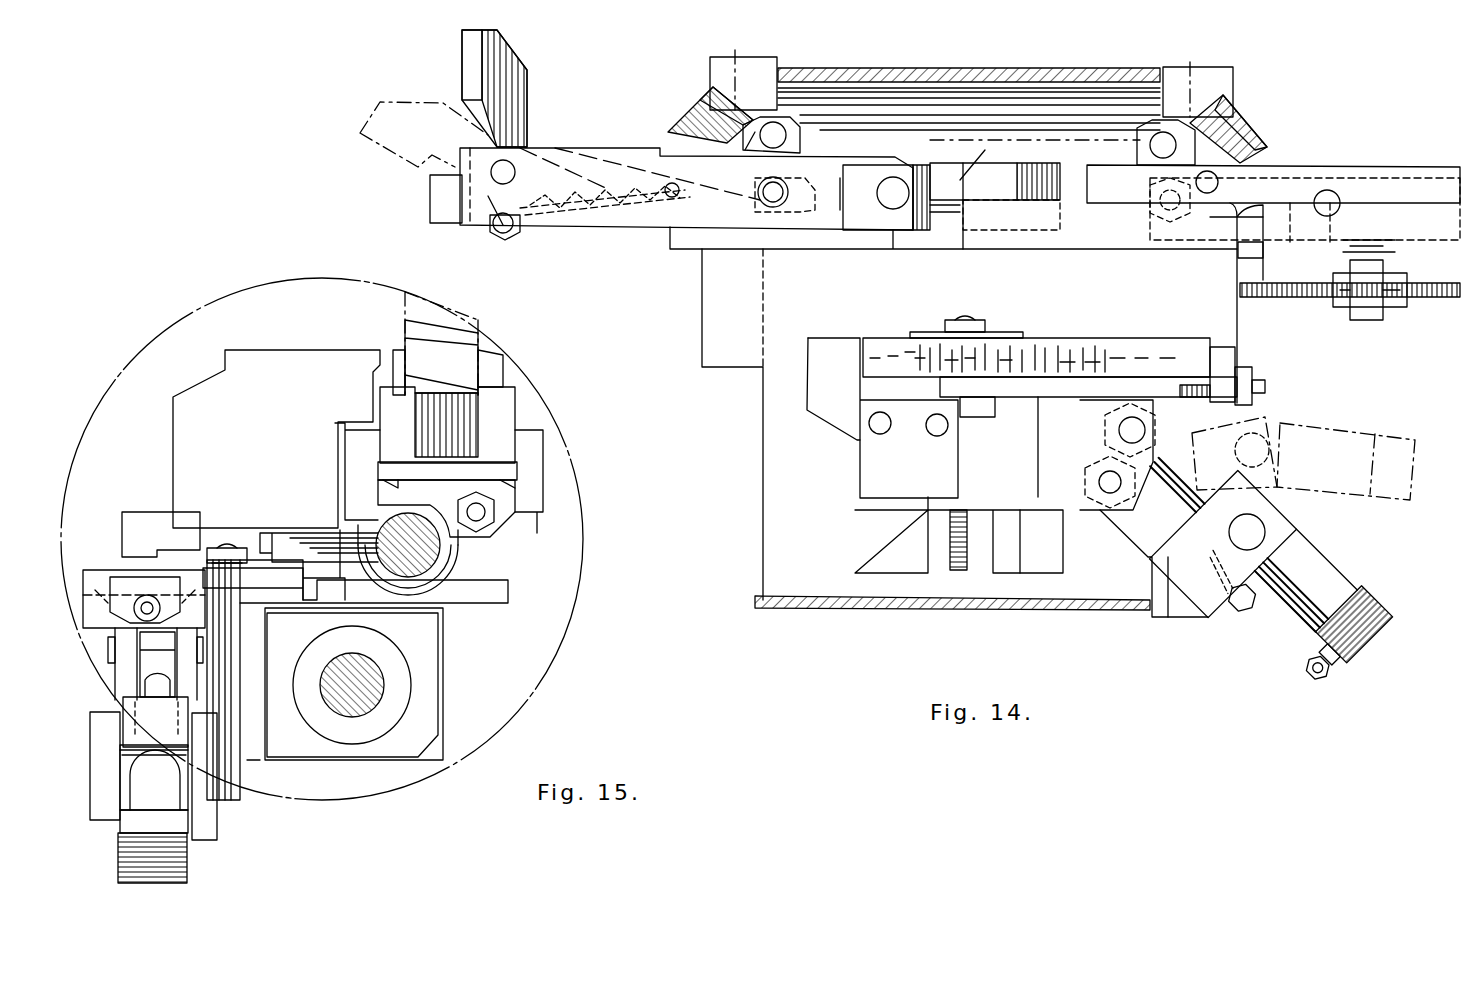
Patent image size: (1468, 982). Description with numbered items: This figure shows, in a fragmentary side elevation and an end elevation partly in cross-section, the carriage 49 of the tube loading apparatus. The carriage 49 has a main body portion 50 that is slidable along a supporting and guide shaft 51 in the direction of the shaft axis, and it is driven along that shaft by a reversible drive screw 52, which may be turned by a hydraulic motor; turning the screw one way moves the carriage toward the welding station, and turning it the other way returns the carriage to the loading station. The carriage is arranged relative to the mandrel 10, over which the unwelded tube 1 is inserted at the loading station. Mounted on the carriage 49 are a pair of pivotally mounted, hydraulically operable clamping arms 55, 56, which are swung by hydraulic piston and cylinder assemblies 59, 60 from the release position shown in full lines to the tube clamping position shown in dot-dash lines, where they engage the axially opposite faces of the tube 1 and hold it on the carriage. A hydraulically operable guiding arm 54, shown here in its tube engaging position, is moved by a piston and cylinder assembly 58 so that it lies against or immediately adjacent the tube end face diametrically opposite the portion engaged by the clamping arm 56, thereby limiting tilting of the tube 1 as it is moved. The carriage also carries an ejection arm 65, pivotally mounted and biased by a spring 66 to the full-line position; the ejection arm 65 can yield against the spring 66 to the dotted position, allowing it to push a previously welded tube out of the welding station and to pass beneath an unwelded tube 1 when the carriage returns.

In FIG. 14, the unwelded tube 1 is at (958, 72).
In FIG. 15, the mandrel 10 is at (193, 452).
In FIG. 14, the carriage 49 is at (1297, 360).
In FIG. 15, the main body portion 50 is at (483, 595).
In FIG. 15, the supporting and guide shaft 51 is at (487, 560).
In FIG. 15, the reversible drive screw 52 is at (352, 717).
In FIG. 14, the guiding arm 54 is at (1210, 618).
In FIG. 14, the clamping arm 55 is at (690, 118).
In FIG. 14, the clamping arm 56 is at (1250, 115).
In FIG. 14, the piston and cylinder assembly 58 is at (1310, 565).
In FIG. 15, the piston and cylinder assembly 58 is at (135, 788).
In FIG. 14, the hydraulic piston and cylinder assembly 59 is at (973, 158).
In FIG. 14, the hydraulic piston and cylinder assembly 60 is at (1405, 167).
In FIG. 14, the ejection arm 65 is at (522, 78).
In FIG. 14, the spring 66 is at (590, 225).